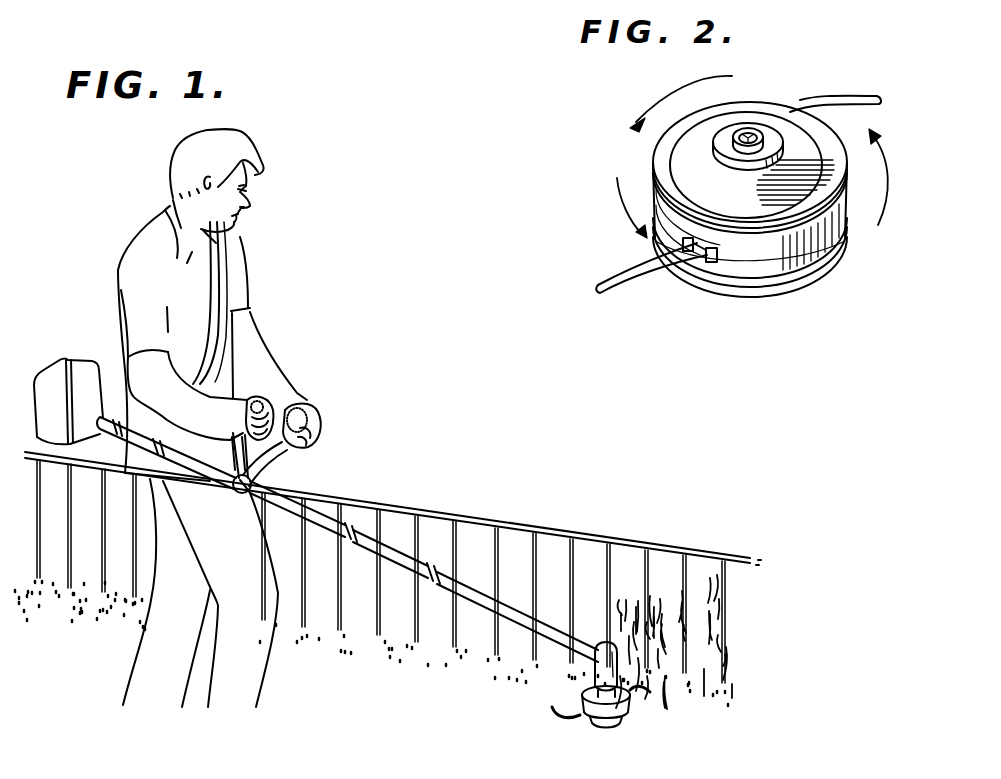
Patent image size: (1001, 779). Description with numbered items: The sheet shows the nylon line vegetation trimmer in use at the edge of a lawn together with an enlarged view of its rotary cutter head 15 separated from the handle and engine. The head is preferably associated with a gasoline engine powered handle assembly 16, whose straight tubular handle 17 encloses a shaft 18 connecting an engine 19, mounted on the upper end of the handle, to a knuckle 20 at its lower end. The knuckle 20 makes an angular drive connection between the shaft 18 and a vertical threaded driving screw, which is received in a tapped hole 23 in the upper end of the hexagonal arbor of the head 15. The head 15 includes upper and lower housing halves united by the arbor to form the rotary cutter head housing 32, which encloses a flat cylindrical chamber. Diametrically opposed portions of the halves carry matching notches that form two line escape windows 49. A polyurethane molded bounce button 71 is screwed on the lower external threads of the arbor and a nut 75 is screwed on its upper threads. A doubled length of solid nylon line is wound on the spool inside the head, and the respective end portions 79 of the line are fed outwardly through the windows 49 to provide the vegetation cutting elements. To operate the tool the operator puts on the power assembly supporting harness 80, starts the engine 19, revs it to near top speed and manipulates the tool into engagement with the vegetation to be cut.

In FIG. 1, the rotary cutter head 15 is at (617, 718).
In FIG. 2, the rotary cutter head 15 is at (701, 303).
In FIG. 1, the gasoline engine powered handle assembly 16 is at (348, 517).
In FIG. 1, the straight tubular handle 17 is at (312, 518).
In FIG. 1, the shaft 18 is at (400, 550).
In FIG. 1, the engine 19 is at (84, 368).
In FIG. 1, the knuckle 20 is at (595, 667).
In FIG. 2, the tapped hole 23 is at (750, 132).
In FIG. 2, the rotary cutter head housing 32 is at (827, 243).
In FIG. 2, the line escape windows 49 is at (703, 262).
In FIG. 2, the bounce button 71 is at (757, 296).
In FIG. 2, the nut 75 is at (717, 148).
In FIG. 2, the end portions of the line 79 is at (843, 100).
In FIG. 1, the power assembly supporting harness 80 is at (220, 331).